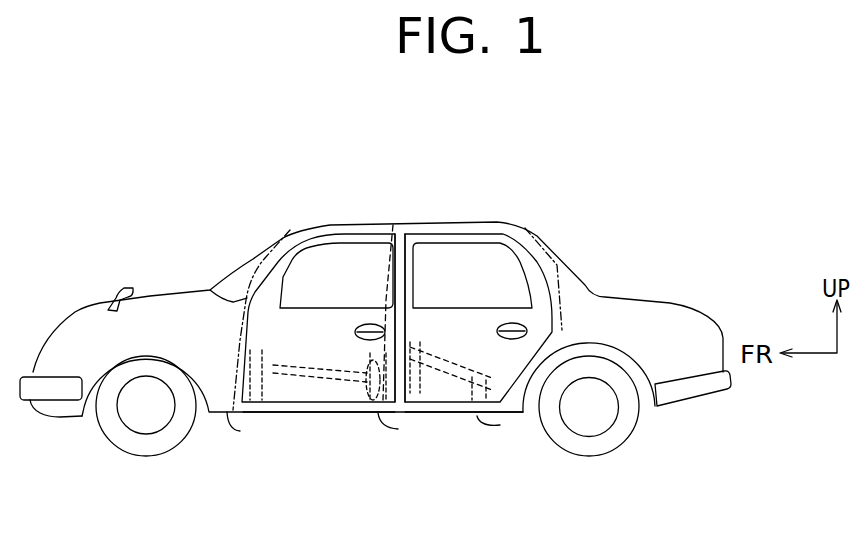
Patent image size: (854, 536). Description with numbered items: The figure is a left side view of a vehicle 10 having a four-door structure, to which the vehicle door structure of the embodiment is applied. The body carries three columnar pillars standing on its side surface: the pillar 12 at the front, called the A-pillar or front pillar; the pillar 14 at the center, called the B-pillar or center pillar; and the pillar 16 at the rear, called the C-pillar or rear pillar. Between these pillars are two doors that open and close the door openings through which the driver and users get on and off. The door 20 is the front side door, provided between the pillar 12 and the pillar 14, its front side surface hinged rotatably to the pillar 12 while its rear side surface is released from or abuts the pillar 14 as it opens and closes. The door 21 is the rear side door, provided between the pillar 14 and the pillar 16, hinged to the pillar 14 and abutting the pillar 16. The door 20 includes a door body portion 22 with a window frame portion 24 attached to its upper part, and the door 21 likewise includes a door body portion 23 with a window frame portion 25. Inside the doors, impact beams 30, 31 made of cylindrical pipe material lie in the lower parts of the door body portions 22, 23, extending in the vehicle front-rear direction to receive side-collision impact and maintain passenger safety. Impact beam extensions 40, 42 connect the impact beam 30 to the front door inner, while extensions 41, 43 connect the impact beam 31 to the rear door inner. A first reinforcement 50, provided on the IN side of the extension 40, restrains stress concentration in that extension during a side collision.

The vehicle 10 is at (657, 223).
The pillar 12 is at (290, 228).
The pillar 14 is at (393, 225).
The pillar 16 is at (511, 215).
The door 20 is at (318, 255).
The door 21 is at (478, 255).
The door body portion 22 is at (312, 327).
The door body portion 23 is at (443, 323).
The window frame portion 24 is at (357, 267).
The window frame portion 25 is at (482, 267).
The impact beam 30 is at (303, 413).
The impact beam 31 is at (448, 413).
The impact beam extension 40 is at (262, 398).
The impact beam extension 41 is at (397, 414).
The impact beam extension 42 is at (367, 385).
The impact beam extension 43 is at (492, 400).
The first reinforcement 50 is at (361, 431).